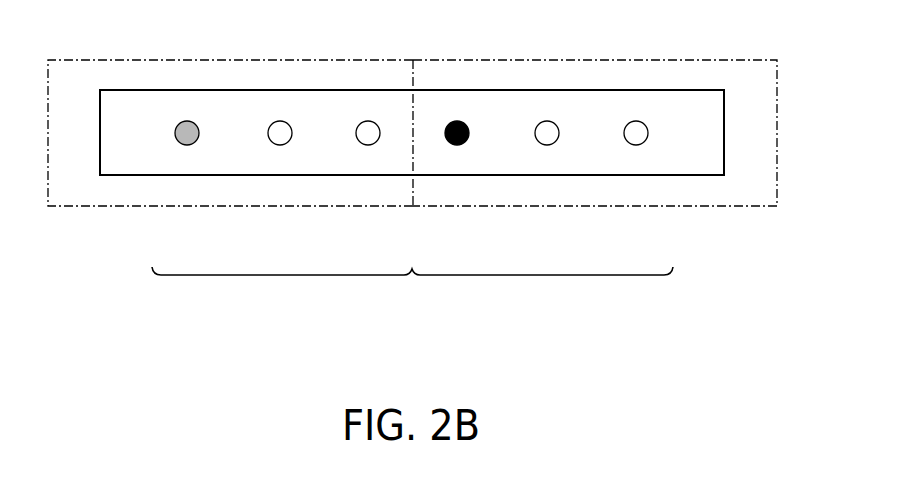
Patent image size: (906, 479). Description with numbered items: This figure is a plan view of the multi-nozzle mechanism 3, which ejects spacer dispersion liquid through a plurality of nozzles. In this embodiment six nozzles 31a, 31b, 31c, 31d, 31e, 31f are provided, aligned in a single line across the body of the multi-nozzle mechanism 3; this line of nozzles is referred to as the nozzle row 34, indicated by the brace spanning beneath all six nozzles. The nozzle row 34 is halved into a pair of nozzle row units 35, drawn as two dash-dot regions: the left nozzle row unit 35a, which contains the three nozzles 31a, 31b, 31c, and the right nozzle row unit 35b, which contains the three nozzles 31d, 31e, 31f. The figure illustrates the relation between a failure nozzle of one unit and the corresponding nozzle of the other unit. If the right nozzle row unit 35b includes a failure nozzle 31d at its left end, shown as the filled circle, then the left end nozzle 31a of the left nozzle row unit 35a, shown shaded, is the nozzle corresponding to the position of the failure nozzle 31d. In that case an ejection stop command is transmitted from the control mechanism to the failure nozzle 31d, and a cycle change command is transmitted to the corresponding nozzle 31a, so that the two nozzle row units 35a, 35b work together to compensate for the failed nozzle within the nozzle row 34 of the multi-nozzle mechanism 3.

The multi-nozzle mechanism 3 is at (589, 90).
The nozzle row units 35 is at (412, 112).
The left nozzle row unit 35a is at (218, 40).
The right nozzle row unit 35b is at (517, 40).
The left end nozzle 31a is at (186, 145).
The nozzle 31b is at (279, 145).
The nozzle 31c is at (367, 145).
The failure nozzle 31d is at (456, 145).
The nozzle 31e is at (546, 145).
The nozzle 31f is at (635, 145).
The nozzle row 34 is at (412, 287).